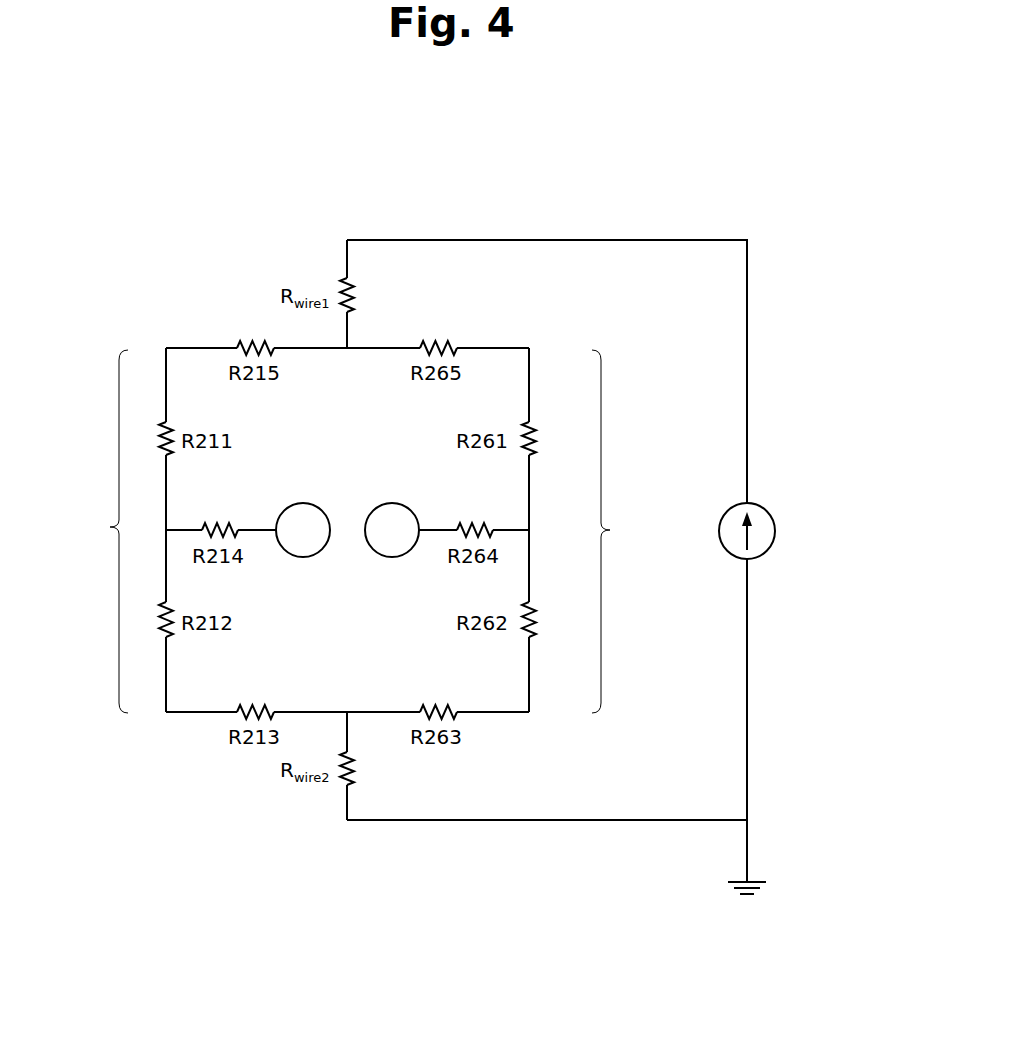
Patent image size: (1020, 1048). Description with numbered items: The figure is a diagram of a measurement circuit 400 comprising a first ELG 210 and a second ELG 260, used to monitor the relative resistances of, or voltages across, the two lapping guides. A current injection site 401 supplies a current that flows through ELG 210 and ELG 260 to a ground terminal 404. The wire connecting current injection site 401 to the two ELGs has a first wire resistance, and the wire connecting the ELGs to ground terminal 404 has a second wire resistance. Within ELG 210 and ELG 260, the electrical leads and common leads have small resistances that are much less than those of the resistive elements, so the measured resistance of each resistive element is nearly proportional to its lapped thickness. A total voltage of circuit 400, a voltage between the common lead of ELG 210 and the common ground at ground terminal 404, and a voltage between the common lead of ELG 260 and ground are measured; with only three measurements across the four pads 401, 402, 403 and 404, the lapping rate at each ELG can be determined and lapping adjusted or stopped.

The measurement circuit 400 is at (722, 142).
The current injection site 401 is at (810, 505).
The pad 402 is at (321, 495).
The pad 403 is at (371, 569).
The ground terminal 404 is at (769, 870).
The ELG 210 is at (98, 531).
The ELG 260 is at (621, 531).